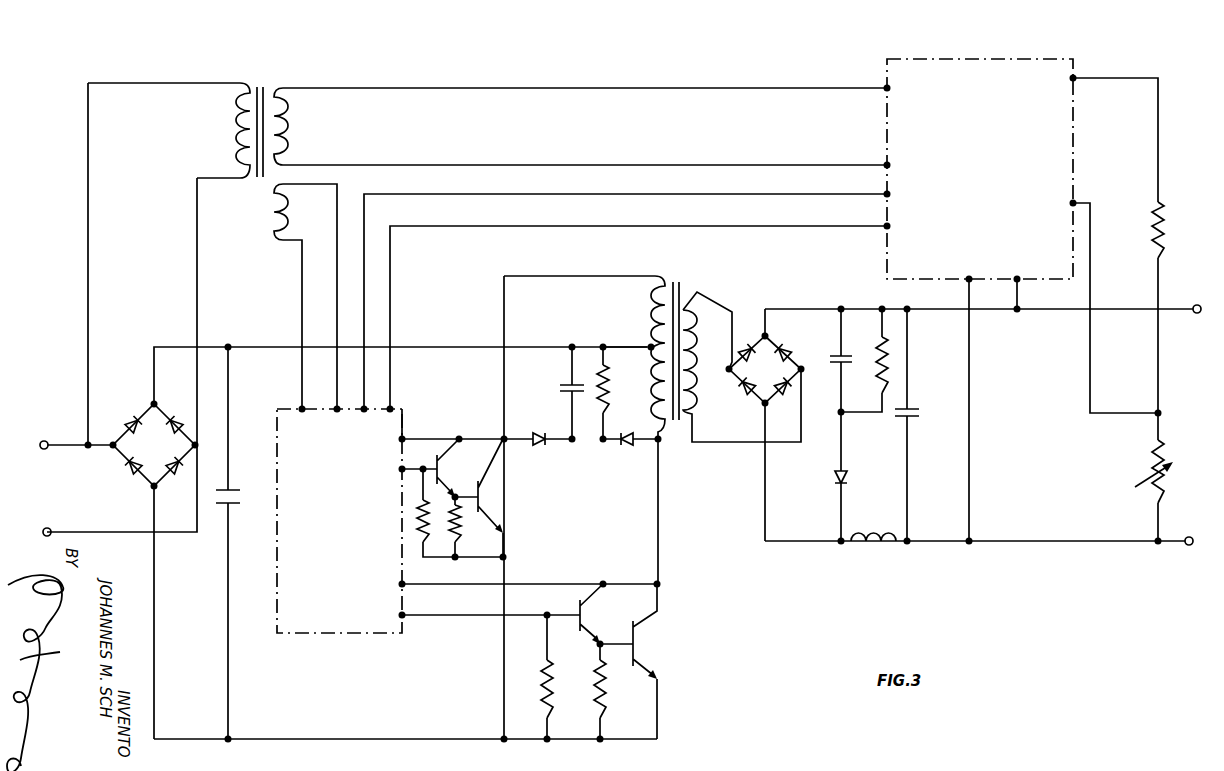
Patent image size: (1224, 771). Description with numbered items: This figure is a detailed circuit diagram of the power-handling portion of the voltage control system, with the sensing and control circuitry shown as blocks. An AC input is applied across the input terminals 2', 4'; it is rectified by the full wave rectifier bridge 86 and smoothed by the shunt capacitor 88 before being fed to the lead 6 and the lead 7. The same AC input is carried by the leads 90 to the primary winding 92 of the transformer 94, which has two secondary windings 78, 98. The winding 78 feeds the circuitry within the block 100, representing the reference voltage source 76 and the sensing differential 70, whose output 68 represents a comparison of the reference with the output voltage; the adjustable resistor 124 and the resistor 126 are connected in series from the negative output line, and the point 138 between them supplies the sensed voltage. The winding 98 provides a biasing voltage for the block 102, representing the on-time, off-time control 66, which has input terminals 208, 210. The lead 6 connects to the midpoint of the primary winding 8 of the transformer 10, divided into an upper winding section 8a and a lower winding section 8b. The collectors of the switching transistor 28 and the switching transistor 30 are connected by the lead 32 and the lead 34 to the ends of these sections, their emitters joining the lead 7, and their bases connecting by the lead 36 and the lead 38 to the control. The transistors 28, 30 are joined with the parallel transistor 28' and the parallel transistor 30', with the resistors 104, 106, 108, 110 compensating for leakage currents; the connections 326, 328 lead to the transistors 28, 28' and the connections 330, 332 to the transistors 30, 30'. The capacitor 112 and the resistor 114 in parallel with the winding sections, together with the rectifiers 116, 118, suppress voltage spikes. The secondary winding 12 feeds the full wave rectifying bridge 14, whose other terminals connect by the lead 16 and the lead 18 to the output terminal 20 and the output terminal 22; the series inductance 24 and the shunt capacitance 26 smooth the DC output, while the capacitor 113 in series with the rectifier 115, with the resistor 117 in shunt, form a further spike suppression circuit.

The transformer 94 is at (262, 83).
The primary winding 92 is at (233, 124).
The secondary winding 78 is at (296, 128).
The secondary winding 98 is at (292, 219).
The leads 90 is at (88, 200).
The input terminal 2' is at (61, 422).
The input terminal 4' is at (29, 539).
The full wave rectifier bridge 86 is at (140, 408).
The shunt capacitor 88 is at (236, 498).
The lead 6 is at (450, 347).
The lead 7 is at (393, 738).
The block 100 is at (1060, 59).
The reference voltage source 76 is at (980, 169).
The sensing differential 70 is at (980, 169).
The output 68 is at (633, 197).
The resistor 126 is at (1165, 228).
The point 138 is at (1162, 411).
The adjustable resistor 124 is at (1168, 480).
The output terminal 20 is at (1197, 305).
The output terminal 22 is at (1186, 546).
The lead 16 is at (803, 308).
The lead 18 is at (790, 543).
The shunt capacitance 26 is at (914, 412).
The capacitor 113 is at (838, 364).
The resistor 117 is at (878, 340).
The rectifier 115 is at (834, 478).
The series inductance 24 is at (872, 536).
The full wave rectifying bridge 14 is at (765, 425).
The transformer 10 is at (686, 279).
The primary winding 8 is at (646, 332).
The upper winding section 8a is at (650, 312).
The lower winding section 8b is at (650, 401).
The secondary winding 12 is at (700, 404).
The lead 32 is at (503, 376).
The capacitor 112 is at (564, 388).
The resistor 114 is at (610, 378).
The rectifier 116 is at (540, 449).
The rectifier 118 is at (628, 449).
The lead 34 is at (660, 505).
The on-time, off-time control 66 is at (341, 520).
The input terminal 208 is at (300, 409).
The input terminal 210 is at (334, 404).
The block 102 is at (404, 420).
The connection 326 is at (433, 438).
The connection 328 is at (422, 461).
The lead 38 is at (420, 472).
The transistor 28' is at (462, 468).
The switching transistor 28 is at (491, 500).
The resistor 104 is at (428, 540).
The resistor 106 is at (460, 530).
The connection 330 is at (424, 584).
The connection 332 is at (466, 610).
The lead 36 is at (527, 619).
The transistor 30' is at (609, 614).
The switching transistor 30 is at (650, 661).
The resistor 108 is at (550, 688).
The resistor 110 is at (607, 689).